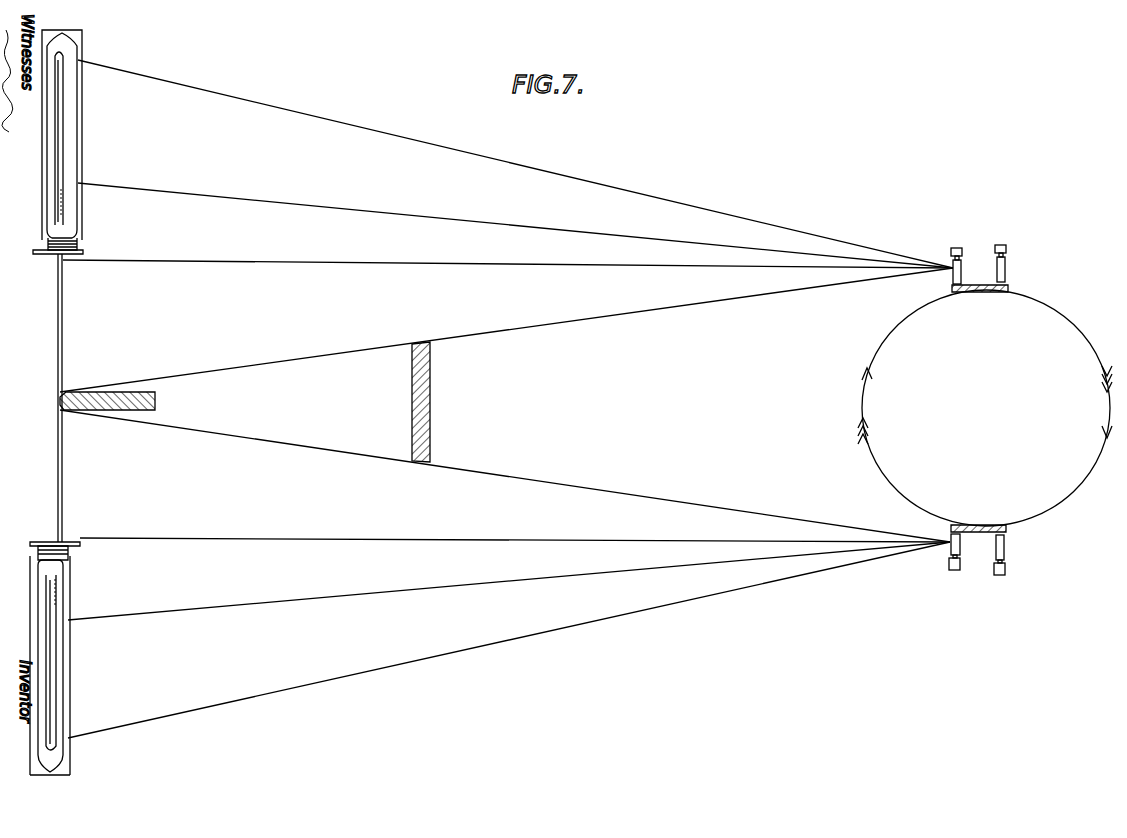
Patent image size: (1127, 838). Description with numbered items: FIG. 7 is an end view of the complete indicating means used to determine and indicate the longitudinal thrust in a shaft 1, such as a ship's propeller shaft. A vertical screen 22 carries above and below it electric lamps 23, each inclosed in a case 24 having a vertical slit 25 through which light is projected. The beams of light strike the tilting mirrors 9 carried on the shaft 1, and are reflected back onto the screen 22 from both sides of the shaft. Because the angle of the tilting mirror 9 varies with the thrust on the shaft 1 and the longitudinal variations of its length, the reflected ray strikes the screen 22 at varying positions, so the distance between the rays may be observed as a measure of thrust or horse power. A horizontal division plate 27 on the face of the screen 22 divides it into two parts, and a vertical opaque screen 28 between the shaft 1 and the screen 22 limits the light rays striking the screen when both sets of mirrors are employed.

The shaft 1 is at (985, 408).
The tilting mirror 9 is at (996, 265).
The vertical screen 22 is at (63, 325).
The electric lamp 23 is at (57, 170).
The case 24 is at (32, 104).
The vertical slit 25 is at (80, 80).
The horizontal division plate 27 is at (115, 395).
The vertical opaque screen 28 is at (412, 400).